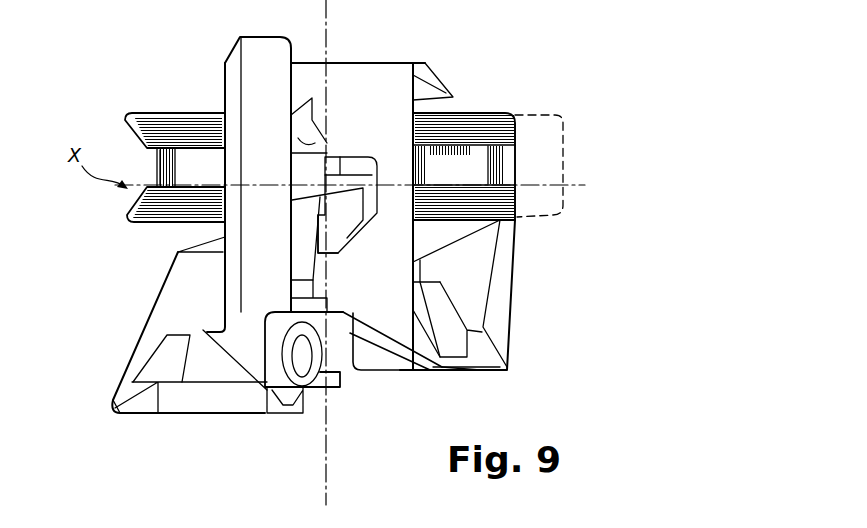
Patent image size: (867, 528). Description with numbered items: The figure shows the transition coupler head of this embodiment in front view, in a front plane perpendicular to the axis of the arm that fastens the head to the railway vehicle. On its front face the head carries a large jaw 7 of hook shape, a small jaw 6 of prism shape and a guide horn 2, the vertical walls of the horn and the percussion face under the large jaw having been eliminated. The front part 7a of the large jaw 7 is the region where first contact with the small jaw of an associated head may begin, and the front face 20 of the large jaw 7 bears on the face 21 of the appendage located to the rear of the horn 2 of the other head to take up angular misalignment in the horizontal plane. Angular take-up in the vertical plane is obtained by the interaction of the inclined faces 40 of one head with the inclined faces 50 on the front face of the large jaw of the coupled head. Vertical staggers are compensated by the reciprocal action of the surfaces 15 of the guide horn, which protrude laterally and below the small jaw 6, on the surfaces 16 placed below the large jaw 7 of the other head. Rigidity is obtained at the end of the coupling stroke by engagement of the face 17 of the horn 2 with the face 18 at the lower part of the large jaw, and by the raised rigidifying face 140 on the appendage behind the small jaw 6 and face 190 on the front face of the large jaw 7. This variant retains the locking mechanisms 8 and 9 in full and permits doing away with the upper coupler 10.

The guide horn 2 is at (212, 410).
The small jaw 6 is at (268, 159).
The large jaw 7 is at (495, 202).
The front part of the large jaw 7a is at (518, 150).
The locking mechanism 8 is at (300, 138).
The locking mechanism 9 is at (344, 214).
The upper coupler 10 is at (327, 396).
The surfaces of the guide horn 15 is at (203, 347).
The surfaces below the large jaw 16 is at (523, 340).
The face of the horn 17 is at (133, 369).
The face at the lower part of the large jaw 18 is at (476, 376).
The front face of the large jaw 20 is at (507, 174).
The face of the appendage 21 is at (173, 167).
The inclined faces 40 is at (143, 123).
The inclined faces of the large jaw 50 is at (448, 127).
The rigidifying face on the appendage 140 is at (197, 113).
The rigidifying face on the large jaw 190 is at (467, 140).